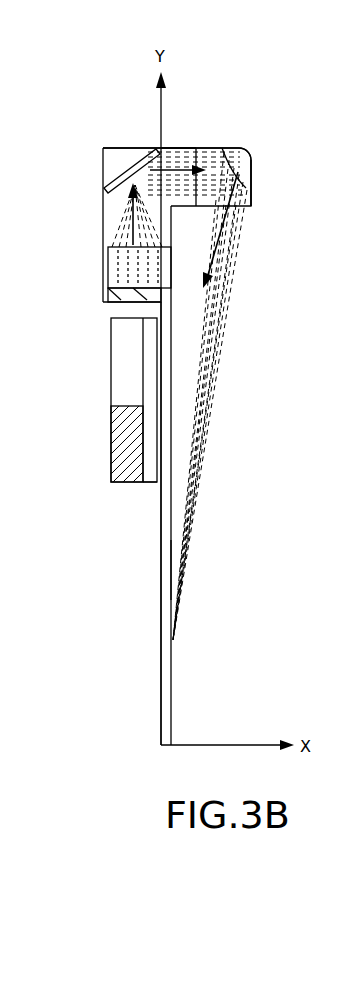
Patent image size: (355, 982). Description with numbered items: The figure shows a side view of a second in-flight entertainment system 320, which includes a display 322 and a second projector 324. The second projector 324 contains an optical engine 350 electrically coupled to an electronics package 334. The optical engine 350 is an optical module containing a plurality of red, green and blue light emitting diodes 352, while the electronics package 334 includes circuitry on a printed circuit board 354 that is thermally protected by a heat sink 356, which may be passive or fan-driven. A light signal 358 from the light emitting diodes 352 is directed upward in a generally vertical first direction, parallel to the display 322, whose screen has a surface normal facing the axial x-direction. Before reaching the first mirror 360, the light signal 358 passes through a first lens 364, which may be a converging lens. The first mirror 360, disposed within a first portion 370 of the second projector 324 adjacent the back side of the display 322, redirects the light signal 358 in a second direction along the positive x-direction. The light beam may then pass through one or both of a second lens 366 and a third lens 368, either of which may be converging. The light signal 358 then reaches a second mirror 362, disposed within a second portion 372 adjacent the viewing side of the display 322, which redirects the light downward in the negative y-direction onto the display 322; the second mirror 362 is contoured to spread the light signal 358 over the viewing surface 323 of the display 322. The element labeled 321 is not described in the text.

The second in-flight entertainment system 320 is at (123, 128).
The second projector 324 is at (208, 148).
The first portion 370 is at (103, 205).
The second lens 366 is at (170, 148).
The third lens 368 is at (205, 148).
The first mirror 360 is at (120, 166).
The second mirror 362 is at (238, 165).
The second portion 372 is at (252, 186).
The first lens 364 is at (103, 250).
The optical engine 350 is at (108, 283).
The red, green and blue light emitting diodes 352 is at (110, 304).
The electronics package 334 is at (111, 386).
The heat sink 356 is at (118, 443).
The printed circuit board 354 is at (152, 472).
The first surface 321 is at (160, 660).
The display 322 is at (172, 510).
The viewing surface 323 is at (172, 557).
The light signal 358 is at (125, 226).